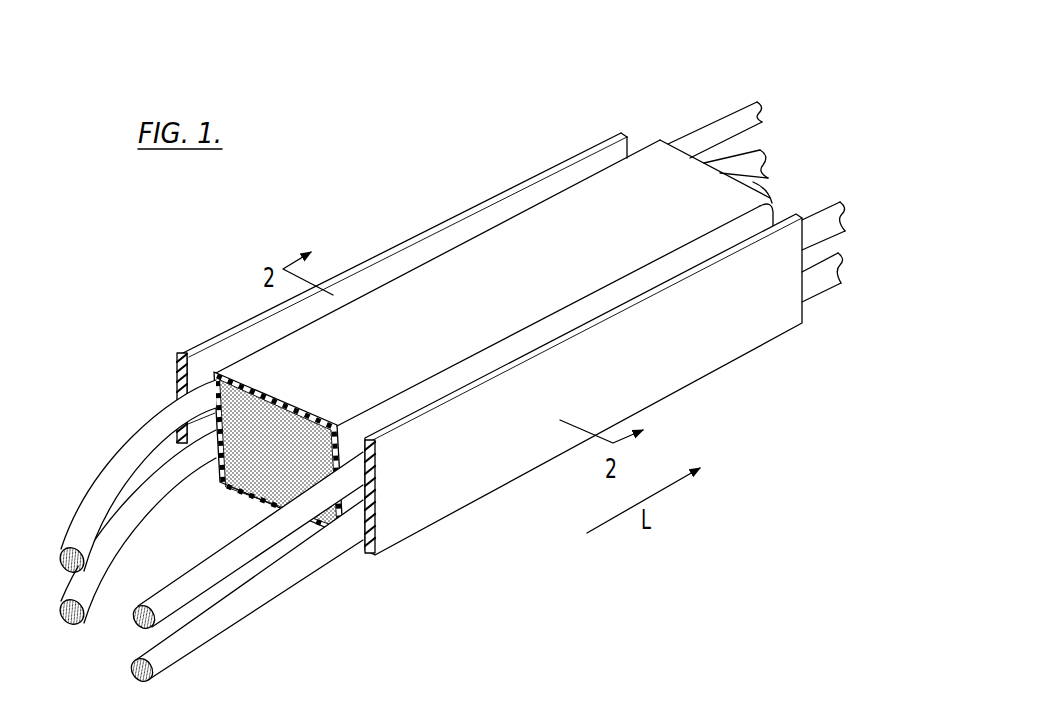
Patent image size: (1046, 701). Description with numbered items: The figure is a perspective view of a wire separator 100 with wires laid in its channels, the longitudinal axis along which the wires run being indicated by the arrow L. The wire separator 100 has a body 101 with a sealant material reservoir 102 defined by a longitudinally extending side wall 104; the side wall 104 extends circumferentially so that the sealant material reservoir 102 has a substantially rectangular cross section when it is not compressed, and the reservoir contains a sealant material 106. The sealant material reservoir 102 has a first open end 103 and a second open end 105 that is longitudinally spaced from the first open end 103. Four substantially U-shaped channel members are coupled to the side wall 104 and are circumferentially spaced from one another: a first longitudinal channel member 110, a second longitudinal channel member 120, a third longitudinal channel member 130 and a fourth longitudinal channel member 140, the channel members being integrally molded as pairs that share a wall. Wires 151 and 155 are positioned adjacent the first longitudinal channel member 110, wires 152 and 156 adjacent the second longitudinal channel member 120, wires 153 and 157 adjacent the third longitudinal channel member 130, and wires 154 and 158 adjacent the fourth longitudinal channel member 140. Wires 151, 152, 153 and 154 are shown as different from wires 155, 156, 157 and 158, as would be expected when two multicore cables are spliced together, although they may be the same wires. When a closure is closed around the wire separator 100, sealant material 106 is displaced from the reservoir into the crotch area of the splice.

The wire separator 100 is at (400, 181).
The body 101 is at (500, 172).
The sealant material reservoir 102 is at (650, 162).
The first open end 103 is at (250, 420).
The side wall 104 is at (707, 173).
The second open end 105 is at (683, 157).
The sealant material 106 is at (228, 373).
The first longitudinal channel member 110 is at (178, 378).
The second longitudinal channel member 120 is at (377, 458).
The third longitudinal channel member 130 is at (177, 447).
The fourth longitudinal channel member 140 is at (375, 537).
The wire 151 is at (97, 473).
The wire 152 is at (150, 507).
The wire 153 is at (190, 570).
The wire 154 is at (280, 592).
The wire 155 is at (757, 101).
The wire 156 is at (760, 181).
The wire 157 is at (830, 203).
The wire 158 is at (842, 253).